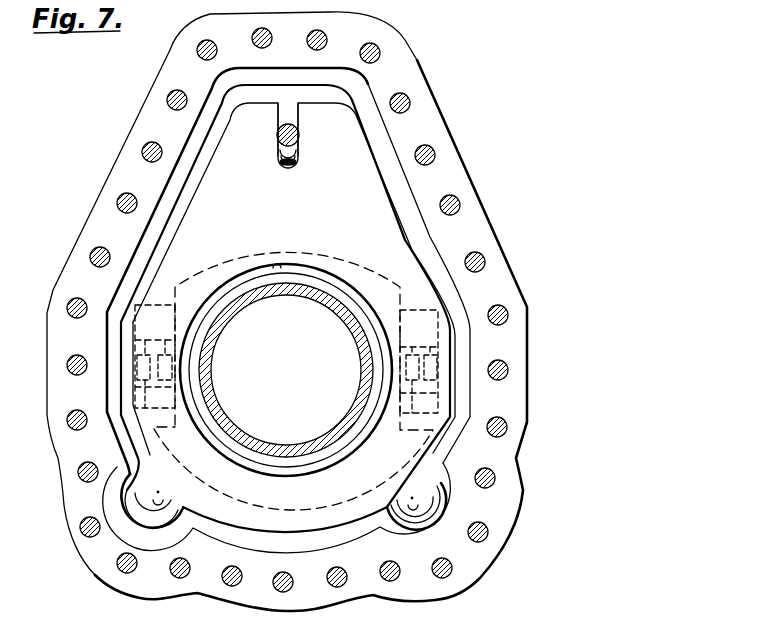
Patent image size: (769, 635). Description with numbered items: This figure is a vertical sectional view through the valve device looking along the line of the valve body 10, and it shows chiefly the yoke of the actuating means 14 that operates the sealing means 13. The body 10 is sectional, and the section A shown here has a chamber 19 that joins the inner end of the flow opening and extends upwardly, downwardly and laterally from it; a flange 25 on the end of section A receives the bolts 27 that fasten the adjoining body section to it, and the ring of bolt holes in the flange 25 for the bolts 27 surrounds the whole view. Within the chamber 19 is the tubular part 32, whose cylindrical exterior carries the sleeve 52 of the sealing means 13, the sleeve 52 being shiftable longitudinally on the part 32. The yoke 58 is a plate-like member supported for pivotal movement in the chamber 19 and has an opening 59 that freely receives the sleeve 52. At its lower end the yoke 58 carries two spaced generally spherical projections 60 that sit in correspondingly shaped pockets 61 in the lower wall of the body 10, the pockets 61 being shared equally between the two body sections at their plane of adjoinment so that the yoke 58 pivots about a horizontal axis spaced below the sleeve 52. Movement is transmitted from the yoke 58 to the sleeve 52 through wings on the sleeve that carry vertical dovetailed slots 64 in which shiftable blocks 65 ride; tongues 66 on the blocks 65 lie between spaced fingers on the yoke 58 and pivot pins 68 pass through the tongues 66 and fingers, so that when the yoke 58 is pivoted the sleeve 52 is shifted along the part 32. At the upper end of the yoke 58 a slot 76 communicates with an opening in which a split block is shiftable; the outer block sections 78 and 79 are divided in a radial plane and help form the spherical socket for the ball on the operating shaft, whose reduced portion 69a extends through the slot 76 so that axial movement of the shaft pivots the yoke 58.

The body 10 is at (104, 193).
The body section A is at (103, 217).
The sealing means 13 is at (323, 246).
The actuating means 14 is at (214, 193).
The chamber 19 is at (399, 181).
The flange 25 is at (427, 124).
The bolts 27 is at (436, 151).
The part 32 is at (301, 297).
The sleeve 52 is at (338, 293).
The yoke 58 is at (286, 326).
The opening 59 is at (278, 266).
The spherical projections 60 is at (140, 494).
The pockets 61 is at (147, 523).
The dovetailed slots 64 is at (138, 384).
The blocks 65 is at (140, 349).
The tongues 66 is at (437, 359).
The pivot pins 68 is at (437, 373).
The reduced portion 69a is at (300, 135).
The slot 76 is at (281, 152).
The block section 78 is at (300, 117).
The block section 79 is at (279, 117).